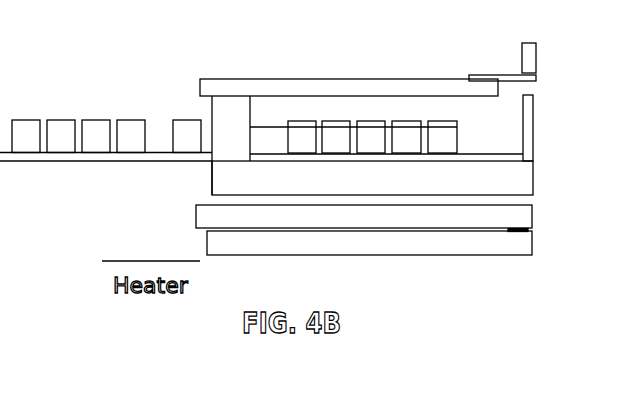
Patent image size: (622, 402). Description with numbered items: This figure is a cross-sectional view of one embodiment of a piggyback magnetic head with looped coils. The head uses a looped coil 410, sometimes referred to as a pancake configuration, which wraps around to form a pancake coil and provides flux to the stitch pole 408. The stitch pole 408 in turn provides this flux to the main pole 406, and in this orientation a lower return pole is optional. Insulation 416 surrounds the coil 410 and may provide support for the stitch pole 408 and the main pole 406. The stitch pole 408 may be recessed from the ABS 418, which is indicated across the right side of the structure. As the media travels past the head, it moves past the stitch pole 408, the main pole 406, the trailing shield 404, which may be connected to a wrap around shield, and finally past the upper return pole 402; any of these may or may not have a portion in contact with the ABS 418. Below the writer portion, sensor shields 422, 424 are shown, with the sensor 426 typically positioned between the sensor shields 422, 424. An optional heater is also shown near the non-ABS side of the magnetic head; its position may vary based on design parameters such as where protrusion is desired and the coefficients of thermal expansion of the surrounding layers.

The upper return pole 402 is at (537, 55).
The trailing shield 404 is at (535, 133).
The main pole 406 is at (505, 75).
The stitch pole 408 is at (376, 78).
The looped coil 410 is at (440, 121).
The insulation 416 is at (421, 190).
The ABS 418 is at (538, 180).
The sensor shield 422 is at (196, 214).
The sensor shield 424 is at (207, 240).
The sensor 426 is at (522, 229).